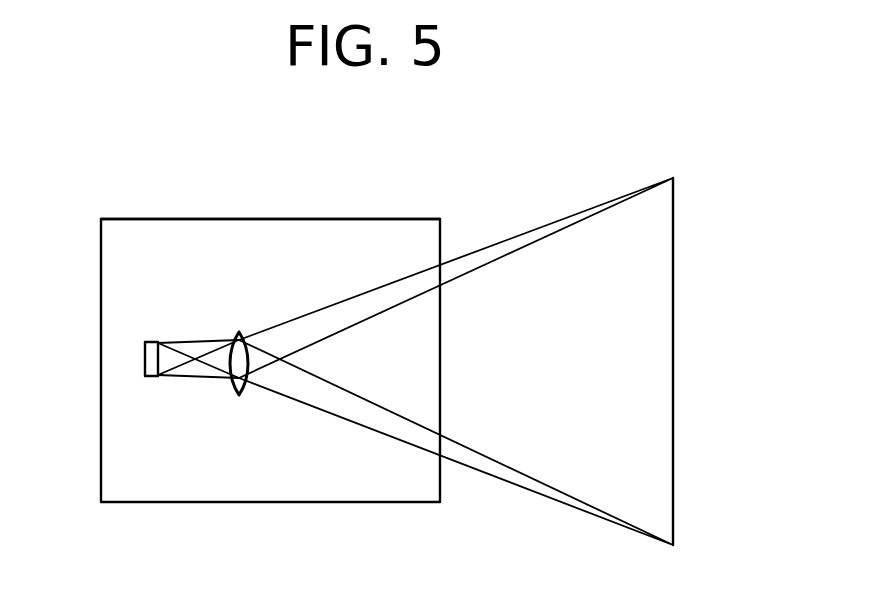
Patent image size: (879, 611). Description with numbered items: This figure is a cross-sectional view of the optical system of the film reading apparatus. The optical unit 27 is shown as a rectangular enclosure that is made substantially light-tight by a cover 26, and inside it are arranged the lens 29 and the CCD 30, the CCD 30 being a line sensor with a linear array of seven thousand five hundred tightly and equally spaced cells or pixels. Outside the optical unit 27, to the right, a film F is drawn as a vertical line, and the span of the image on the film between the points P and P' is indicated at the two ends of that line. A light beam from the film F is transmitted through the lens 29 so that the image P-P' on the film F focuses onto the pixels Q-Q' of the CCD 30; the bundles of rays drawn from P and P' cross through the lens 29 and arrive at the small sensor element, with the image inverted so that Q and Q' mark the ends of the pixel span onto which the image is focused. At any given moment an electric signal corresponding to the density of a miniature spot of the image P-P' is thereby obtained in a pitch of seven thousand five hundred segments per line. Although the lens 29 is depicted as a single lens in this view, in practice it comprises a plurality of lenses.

The cover 26 is at (178, 232).
The optical unit 27 is at (330, 219).
The lens 29 is at (239, 333).
The CCD 30 is at (145, 355).
The pixel end point Q is at (160, 301).
The pixel end point Q' is at (159, 415).
The image end point P is at (669, 561).
The image end point P' is at (669, 154).
The film F is at (673, 348).